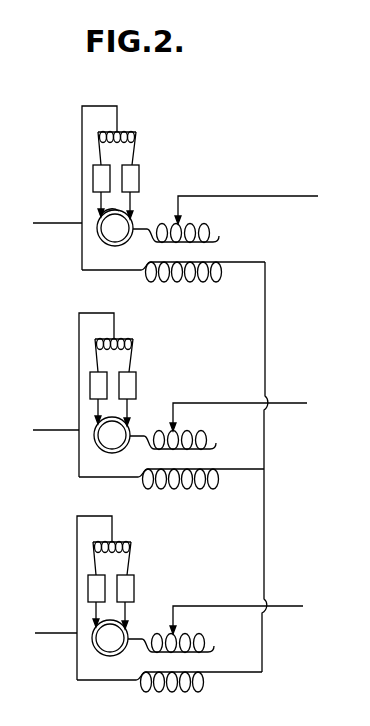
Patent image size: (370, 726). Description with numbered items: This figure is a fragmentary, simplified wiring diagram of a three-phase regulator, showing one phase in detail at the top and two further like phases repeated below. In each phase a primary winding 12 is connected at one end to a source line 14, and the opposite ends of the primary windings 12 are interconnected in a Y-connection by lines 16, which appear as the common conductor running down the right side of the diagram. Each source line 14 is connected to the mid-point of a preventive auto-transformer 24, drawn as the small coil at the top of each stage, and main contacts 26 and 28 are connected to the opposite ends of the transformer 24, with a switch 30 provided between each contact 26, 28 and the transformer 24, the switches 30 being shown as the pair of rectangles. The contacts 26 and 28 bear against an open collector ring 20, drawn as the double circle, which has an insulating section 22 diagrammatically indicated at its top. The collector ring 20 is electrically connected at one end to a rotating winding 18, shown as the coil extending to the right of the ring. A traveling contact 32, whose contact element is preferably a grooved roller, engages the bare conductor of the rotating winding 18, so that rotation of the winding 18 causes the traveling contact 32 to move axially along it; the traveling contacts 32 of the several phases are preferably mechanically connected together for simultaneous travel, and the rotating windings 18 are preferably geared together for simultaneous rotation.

The primary winding 12 is at (191, 282).
The source line 14 is at (36, 224).
The line 16 is at (262, 530).
The rotating winding 18 is at (218, 231).
The open collector ring 20 is at (99, 239).
The insulating section 22 is at (100, 208).
The preventive auto-transformer 24 is at (125, 130).
The main contact 26 is at (131, 204).
The main contact 28 is at (99, 199).
The switch 30 is at (137, 173).
The traveling contact 32 is at (180, 198).